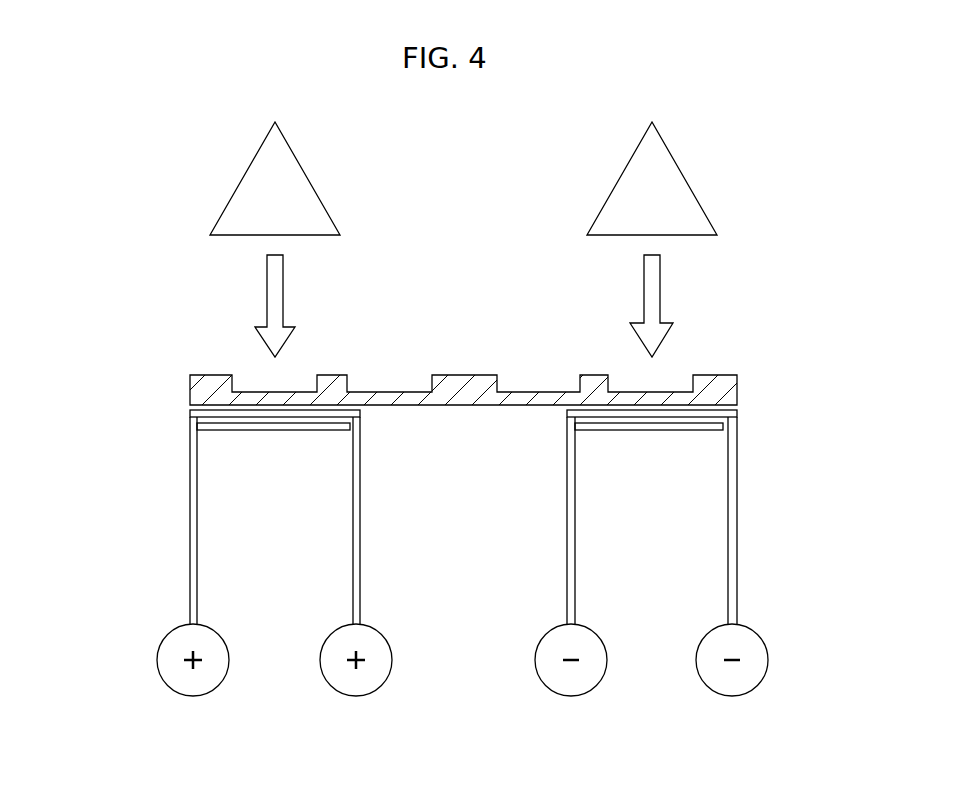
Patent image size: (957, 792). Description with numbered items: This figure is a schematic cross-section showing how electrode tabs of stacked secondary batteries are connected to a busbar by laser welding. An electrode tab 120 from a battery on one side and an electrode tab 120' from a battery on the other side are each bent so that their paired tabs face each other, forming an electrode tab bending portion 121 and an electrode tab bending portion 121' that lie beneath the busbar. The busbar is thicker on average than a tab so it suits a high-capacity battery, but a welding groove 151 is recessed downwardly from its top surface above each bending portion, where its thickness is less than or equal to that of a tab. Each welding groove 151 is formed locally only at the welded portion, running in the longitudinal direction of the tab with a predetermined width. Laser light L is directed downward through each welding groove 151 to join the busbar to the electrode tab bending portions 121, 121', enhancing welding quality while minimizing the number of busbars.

The light L is at (310, 180).
The welding groove 151 is at (272, 386).
The electrode tab 120 is at (203, 517).
The electrode tab bending portion 121 is at (273, 477).
The electrode tab 120' is at (723, 517).
The electrode tab bending portion 121' is at (649, 477).